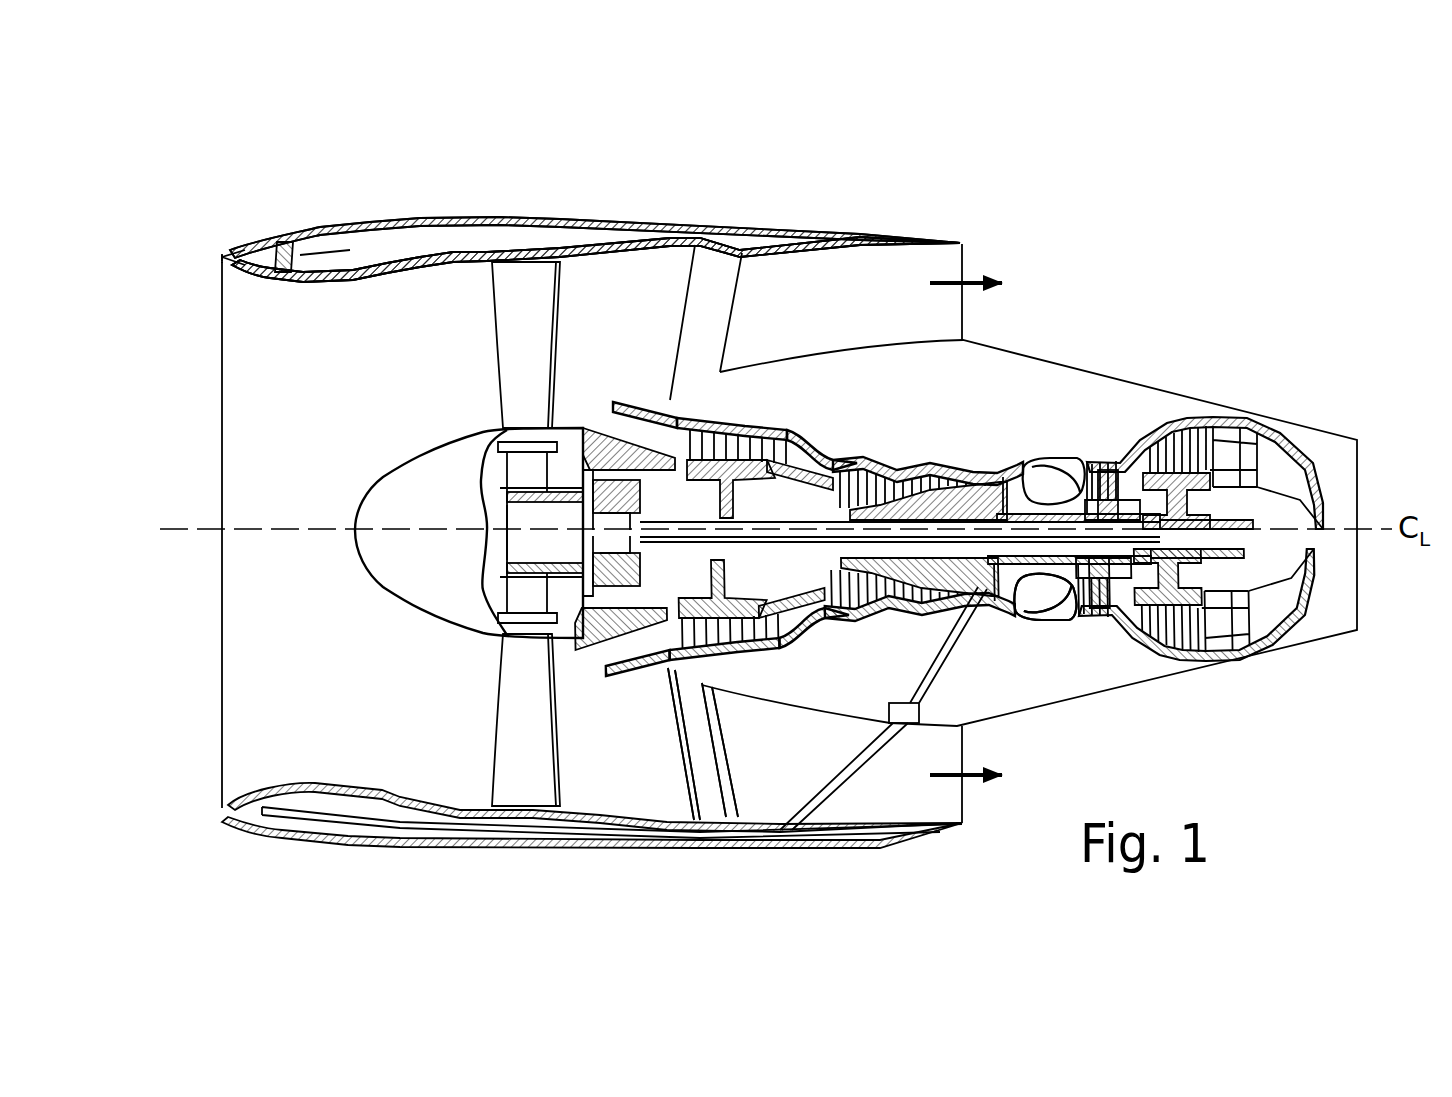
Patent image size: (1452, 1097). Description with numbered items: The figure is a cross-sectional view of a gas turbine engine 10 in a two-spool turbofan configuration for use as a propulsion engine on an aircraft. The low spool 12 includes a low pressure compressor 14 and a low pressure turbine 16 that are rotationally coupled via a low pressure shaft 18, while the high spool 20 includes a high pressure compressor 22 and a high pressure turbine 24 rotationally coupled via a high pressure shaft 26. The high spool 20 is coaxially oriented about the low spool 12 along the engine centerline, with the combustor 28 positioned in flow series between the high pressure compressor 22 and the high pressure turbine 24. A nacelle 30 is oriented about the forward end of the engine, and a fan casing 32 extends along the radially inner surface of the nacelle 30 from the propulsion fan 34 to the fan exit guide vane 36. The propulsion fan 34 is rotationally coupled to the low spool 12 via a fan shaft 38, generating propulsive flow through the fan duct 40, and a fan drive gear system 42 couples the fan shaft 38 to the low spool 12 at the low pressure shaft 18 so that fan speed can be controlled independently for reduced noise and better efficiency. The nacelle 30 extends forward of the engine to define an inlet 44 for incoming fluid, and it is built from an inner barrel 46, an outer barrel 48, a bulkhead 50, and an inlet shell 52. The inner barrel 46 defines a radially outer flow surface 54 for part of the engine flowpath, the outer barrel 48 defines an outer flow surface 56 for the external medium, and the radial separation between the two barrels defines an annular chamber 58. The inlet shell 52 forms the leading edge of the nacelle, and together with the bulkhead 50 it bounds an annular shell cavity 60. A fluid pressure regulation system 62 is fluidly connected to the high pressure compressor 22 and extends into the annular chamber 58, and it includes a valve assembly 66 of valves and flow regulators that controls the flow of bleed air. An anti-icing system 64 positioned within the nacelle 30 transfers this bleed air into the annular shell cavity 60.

The gas turbine engine 10 is at (812, 196).
The low spool 12 is at (838, 600).
The low pressure compressor 14 is at (748, 424).
The low pressure turbine 16 is at (1177, 420).
The low pressure shaft 18 is at (823, 551).
The high spool 20 is at (1066, 560).
The high pressure compressor 22 is at (977, 468).
The high pressure turbine 24 is at (1103, 455).
The high pressure shaft 26 is at (1015, 560).
The combustor 28 is at (1052, 455).
The nacelle 30 is at (554, 235).
The fan casing 32 is at (331, 425).
The propulsion fan 34 is at (524, 360).
The fan exit guide vane 36 is at (713, 317).
The fan shaft 38 is at (557, 580).
The fan duct 40 is at (808, 763).
The fan drive gear system 42 is at (584, 526).
The inlet 44 is at (222, 382).
The inner barrel 46 is at (320, 281).
The outer barrel 48 is at (363, 225).
The bulkhead 50 is at (293, 258).
The inlet shell 52 is at (272, 237).
The radially outer flow surface 54 is at (412, 268).
The outer flow surface 56 is at (532, 218).
The annular chamber 58 is at (393, 247).
The annular shell cavity 60 is at (226, 260).
The fluid pressure regulation system 62 is at (950, 678).
The anti-icing system 64 is at (360, 832).
The valve assembly 66 is at (912, 727).